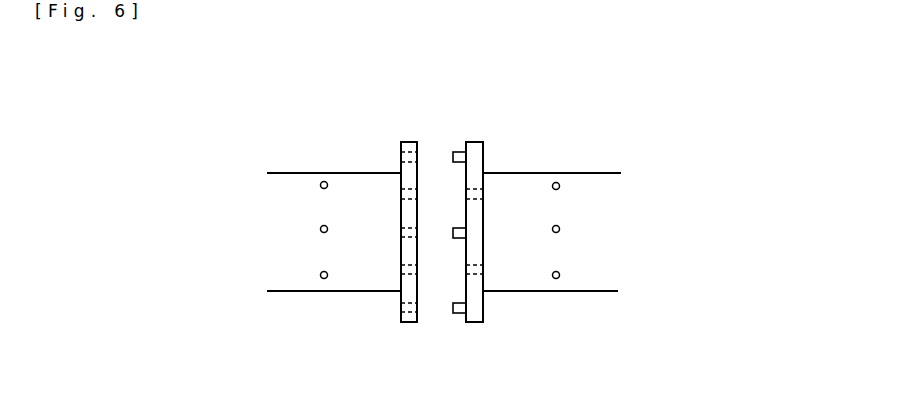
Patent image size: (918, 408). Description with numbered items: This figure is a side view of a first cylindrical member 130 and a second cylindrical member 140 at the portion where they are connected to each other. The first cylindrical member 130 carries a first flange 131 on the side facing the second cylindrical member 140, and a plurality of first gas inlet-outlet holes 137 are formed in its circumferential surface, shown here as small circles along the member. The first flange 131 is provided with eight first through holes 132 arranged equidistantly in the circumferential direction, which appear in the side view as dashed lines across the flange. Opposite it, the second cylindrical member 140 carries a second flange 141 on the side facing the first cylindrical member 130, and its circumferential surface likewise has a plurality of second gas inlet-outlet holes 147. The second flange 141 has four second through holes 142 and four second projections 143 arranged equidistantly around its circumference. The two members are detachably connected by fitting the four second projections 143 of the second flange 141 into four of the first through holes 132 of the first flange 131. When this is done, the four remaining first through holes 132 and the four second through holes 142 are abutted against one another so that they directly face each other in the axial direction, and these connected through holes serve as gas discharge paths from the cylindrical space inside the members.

The first cylindrical member 130 is at (304, 167).
The first flange 131 is at (413, 145).
The first through holes 132 is at (401, 157).
The first gas inlet-outlet holes 137 is at (324, 281).
The second cylindrical member 140 is at (534, 168).
The second flange 141 is at (476, 143).
The second through holes 142 is at (484, 192).
The second projections 143 is at (463, 156).
The second gas inlet-outlet holes 147 is at (560, 279).